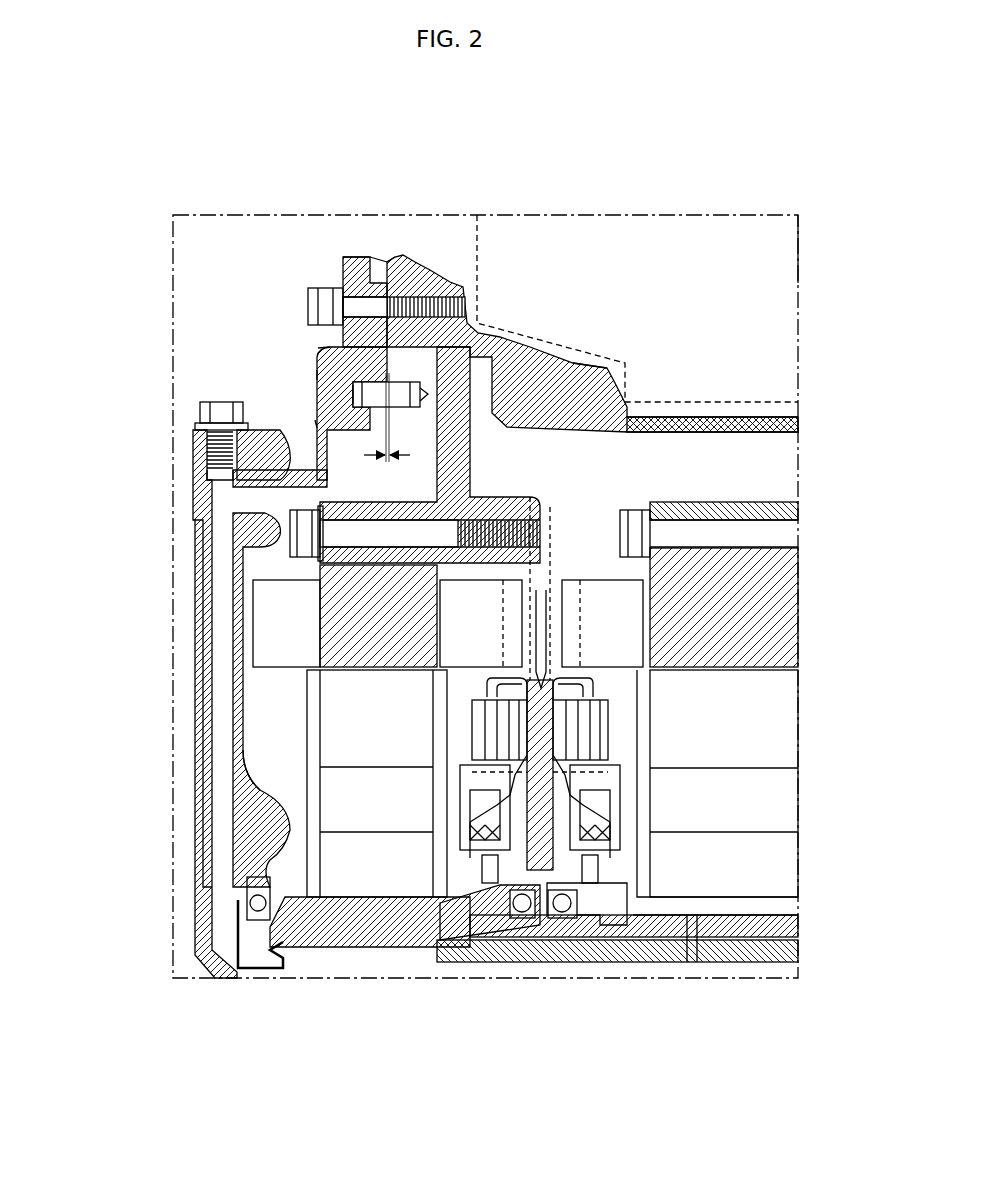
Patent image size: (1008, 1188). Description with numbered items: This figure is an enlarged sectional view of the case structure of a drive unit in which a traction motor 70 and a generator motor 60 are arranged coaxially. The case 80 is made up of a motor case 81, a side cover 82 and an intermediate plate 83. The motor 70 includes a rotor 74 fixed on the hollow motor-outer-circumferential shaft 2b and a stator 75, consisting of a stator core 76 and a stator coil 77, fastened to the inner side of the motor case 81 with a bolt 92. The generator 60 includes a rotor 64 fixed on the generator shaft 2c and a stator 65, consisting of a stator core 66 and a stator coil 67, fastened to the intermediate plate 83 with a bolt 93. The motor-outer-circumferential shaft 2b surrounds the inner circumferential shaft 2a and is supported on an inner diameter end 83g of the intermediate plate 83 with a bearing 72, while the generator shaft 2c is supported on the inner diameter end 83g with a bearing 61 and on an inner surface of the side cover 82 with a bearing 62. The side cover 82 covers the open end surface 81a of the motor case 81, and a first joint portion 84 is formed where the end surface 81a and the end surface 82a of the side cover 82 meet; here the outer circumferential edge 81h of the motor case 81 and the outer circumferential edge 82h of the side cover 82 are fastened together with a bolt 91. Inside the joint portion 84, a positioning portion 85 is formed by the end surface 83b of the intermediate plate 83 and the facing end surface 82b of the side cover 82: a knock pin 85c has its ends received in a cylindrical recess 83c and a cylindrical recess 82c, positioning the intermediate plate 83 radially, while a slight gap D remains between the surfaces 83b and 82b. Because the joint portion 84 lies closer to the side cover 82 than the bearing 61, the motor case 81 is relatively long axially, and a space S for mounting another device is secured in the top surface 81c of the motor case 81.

The inner circumferential shaft 2a is at (338, 933).
The motor-outer-circumferential shaft 2b is at (635, 930).
The generator shaft 2c is at (732, 953).
The generator motor 60 is at (404, 490).
The bearing 61 is at (475, 895).
The bearing 62 is at (253, 885).
The rotor 64 is at (357, 722).
The stator 65 is at (252, 594).
The stator core 66 is at (337, 577).
The stator coil 67 is at (280, 612).
The traction motor 70 is at (799, 405).
The bearing 72 is at (565, 882).
The rotor 74 is at (737, 717).
The stator 75 is at (724, 388).
The stator core 76 is at (742, 490).
The stator coil 77 is at (690, 598).
The case 80 is at (425, 533).
The motor case 81 is at (592, 260).
The end surface 81a is at (400, 278).
The top surface 81c is at (583, 361).
The outer circumferential edge 81h is at (445, 300).
The side cover 82 is at (219, 566).
The end surface 82a is at (343, 282).
The end surface 82b is at (290, 455).
The cylindrical recess 82c is at (316, 425).
The outer circumferential edge 82h is at (362, 290).
The intermediate plate 83 is at (298, 499).
The end surface 83b is at (318, 375).
The cylindrical recess 83c is at (330, 352).
The inner diameter end 83g is at (530, 866).
The joint portion 84 is at (380, 255).
The positioning portion 85 is at (270, 334).
The knock pin 85c is at (352, 398).
The bolt 91 is at (312, 312).
The bolt 92 is at (604, 598).
The bolt 93 is at (297, 513).
The gap D is at (381, 420).
The space S is at (620, 240).